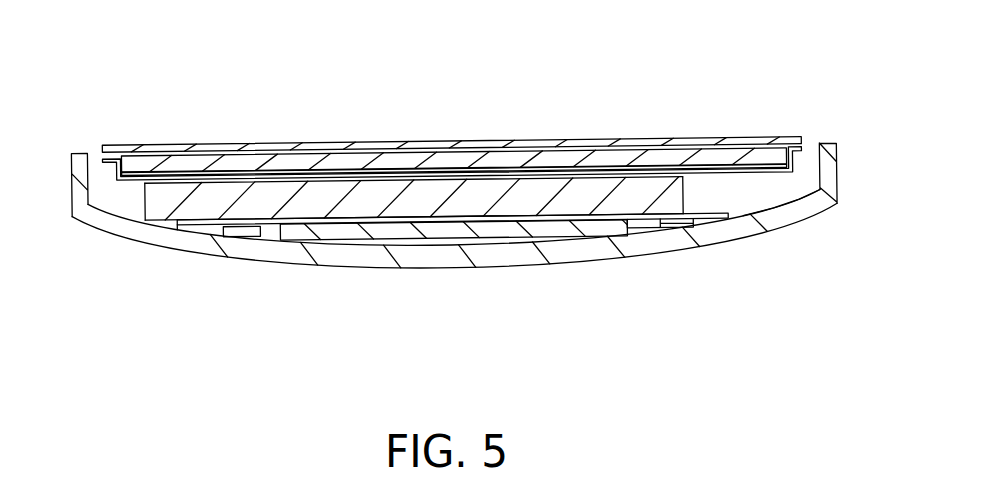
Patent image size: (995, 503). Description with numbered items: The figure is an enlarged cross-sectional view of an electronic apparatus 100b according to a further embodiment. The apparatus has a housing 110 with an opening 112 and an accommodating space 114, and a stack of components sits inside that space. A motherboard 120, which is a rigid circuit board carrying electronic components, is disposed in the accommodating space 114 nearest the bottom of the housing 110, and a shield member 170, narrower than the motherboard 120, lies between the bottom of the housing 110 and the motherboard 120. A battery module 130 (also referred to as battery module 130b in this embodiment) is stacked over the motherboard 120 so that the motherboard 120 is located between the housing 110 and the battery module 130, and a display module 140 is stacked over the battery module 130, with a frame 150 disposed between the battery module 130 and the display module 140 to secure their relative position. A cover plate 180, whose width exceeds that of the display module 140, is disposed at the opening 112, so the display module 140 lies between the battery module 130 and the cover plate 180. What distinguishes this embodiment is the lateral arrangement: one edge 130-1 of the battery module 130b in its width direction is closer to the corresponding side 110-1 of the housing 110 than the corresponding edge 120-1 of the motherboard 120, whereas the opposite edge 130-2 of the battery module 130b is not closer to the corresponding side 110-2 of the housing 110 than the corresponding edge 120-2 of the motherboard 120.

The electronic apparatus 100b is at (798, 62).
The housing 110 is at (828, 146).
The side of the housing 110-1 is at (71, 215).
The side of the housing 110-2 is at (838, 210).
The opening 112 is at (811, 141).
The accommodating space 114 is at (784, 192).
The motherboard 120 is at (607, 230).
The edge of the motherboard 120-1 is at (177, 227).
The edge of the motherboard 120-2 is at (746, 228).
The battery module 130 is at (396, 246).
The edge of the battery module 130-1 is at (146, 199).
The edge of the battery module 130-2 is at (692, 192).
The battery module 130b is at (487, 198).
The display module 140 is at (744, 154).
The frame 150 is at (772, 178).
The shield member 170 is at (550, 219).
The cover plate 180 is at (697, 140).